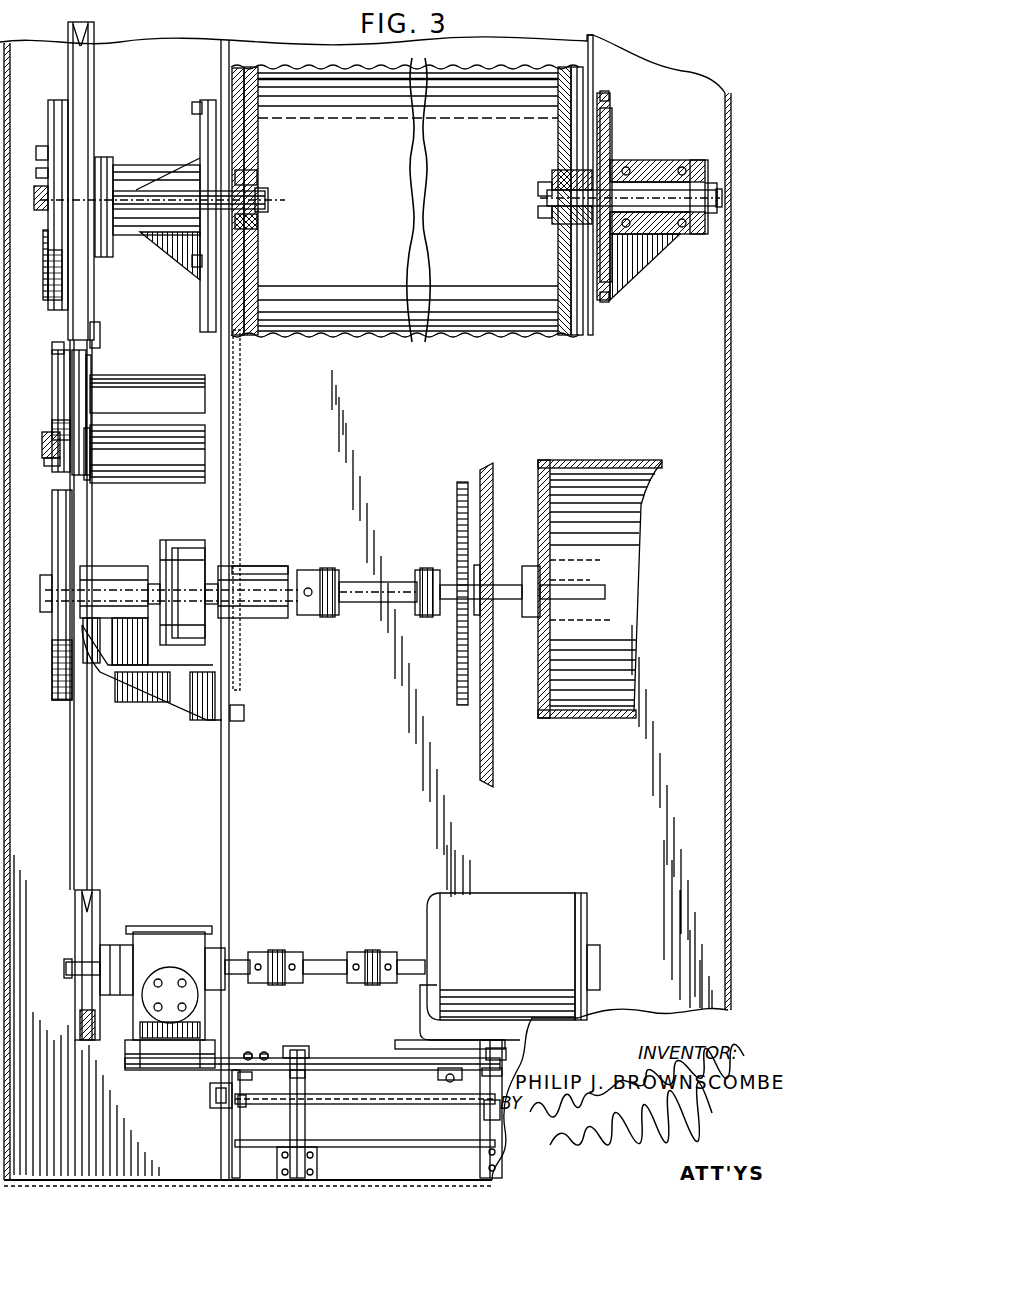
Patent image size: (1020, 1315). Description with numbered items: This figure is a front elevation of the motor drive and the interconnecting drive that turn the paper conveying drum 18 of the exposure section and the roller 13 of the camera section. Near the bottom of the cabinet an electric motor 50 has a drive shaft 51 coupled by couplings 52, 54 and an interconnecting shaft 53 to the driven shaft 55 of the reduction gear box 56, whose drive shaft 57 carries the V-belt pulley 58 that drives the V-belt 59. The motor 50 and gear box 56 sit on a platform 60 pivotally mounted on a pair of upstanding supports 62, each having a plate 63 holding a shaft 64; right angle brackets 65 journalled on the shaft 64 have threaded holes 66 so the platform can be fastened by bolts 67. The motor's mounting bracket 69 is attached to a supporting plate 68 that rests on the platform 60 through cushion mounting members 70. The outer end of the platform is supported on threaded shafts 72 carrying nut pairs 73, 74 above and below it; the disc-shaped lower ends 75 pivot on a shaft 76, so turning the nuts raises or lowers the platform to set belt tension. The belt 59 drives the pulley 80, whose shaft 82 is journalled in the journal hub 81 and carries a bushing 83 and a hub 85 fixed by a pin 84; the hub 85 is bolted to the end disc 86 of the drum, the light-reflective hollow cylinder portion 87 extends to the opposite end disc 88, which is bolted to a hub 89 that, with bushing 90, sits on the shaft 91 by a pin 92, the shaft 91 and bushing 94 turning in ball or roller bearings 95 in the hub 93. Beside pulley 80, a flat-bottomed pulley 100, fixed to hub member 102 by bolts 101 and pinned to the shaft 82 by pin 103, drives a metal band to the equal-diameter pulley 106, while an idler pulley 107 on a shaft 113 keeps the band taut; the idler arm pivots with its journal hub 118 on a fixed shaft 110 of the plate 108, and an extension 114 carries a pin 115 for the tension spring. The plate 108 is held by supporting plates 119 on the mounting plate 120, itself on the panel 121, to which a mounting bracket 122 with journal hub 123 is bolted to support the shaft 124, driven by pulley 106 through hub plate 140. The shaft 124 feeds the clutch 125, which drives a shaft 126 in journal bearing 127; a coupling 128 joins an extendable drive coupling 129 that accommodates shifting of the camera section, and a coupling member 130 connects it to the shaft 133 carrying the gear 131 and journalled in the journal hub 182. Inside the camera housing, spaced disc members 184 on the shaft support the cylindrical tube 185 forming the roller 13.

The roller 13 is at (581, 591).
The drum 18 is at (412, 202).
The electric motor 50 is at (500, 908).
The drive shaft 51 is at (404, 958).
The coupling 52 is at (355, 950).
The interconnecting shaft 53 is at (310, 958).
The coupling 54 is at (290, 952).
The driven shaft 55 is at (238, 958).
The reduction gear box 56 is at (182, 962).
The drive shaft 57 is at (67, 970).
The V-belt pulley 58 is at (75, 1000).
The V-belt 59 is at (96, 862).
The platform 60 is at (338, 1068).
The upstanding supports 62 is at (232, 1122).
The plate 63 is at (212, 1105).
The shaft 64 is at (368, 1104).
The right angle brackets 65 is at (242, 1104).
The threaded holes 66 is at (250, 1074).
The bolts 67 is at (266, 1052).
The supporting plate 68 is at (444, 1066).
The mounting bracket 69 is at (451, 1012).
The cushion mounting members 70 is at (400, 1056).
The threaded shafts 72 is at (305, 1122).
The nuts 73 is at (304, 1048).
The nuts 74 is at (482, 1075).
The lower ends 75 is at (312, 1140).
The shaft 76 is at (317, 1163).
The pulley 80 is at (96, 78).
The journal hub 81 is at (173, 170).
The shaft 82 is at (268, 196).
The bushing 83 is at (258, 178).
The pin 84 is at (267, 208).
The hub 85 is at (258, 226).
The end disc 86 is at (251, 282).
The hollow cylinder portion 87 is at (306, 82).
The end disc 88 is at (560, 124).
The hub 89 is at (556, 180).
The bushing 90 is at (630, 198).
The shaft 91 is at (546, 193).
The pin 92 is at (544, 210).
The hub 93 is at (607, 144).
The bushing 94 is at (640, 182).
The ball or roller bearings 95 is at (617, 176).
The pulley 100 is at (52, 287).
The bolts 101 is at (44, 154).
The hub member 102 is at (44, 176).
The pin 103 is at (40, 208).
The pulley 106 is at (56, 538).
The idler pulley 107 is at (58, 368).
The plate 108 is at (90, 410).
The fixed shaft 110 is at (44, 446).
The shaft 113 is at (80, 394).
The extension 114 is at (100, 336).
The pin 115 is at (54, 348).
The journal hub 118 is at (52, 466).
The supporting plates 119 is at (179, 410).
The mounting plate 120 is at (223, 526).
The panel 121 is at (232, 455).
The mounting bracket 122 is at (162, 700).
The journal hub 123 is at (105, 570).
The shaft 124 is at (172, 585).
The clutch 125 is at (192, 548).
The shaft 126 is at (253, 591).
The journal bearing 127 is at (242, 570).
The coupling 128 is at (306, 580).
The extendable drive coupling 129 is at (348, 604).
The coupling member 130 is at (422, 616).
The gear 131 is at (457, 540).
The shaft 133 is at (502, 600).
The hub plate 140 is at (46, 580).
The journal hub 182 is at (491, 553).
The disc members 184 is at (538, 667).
The cylindrical tube 185 is at (590, 720).